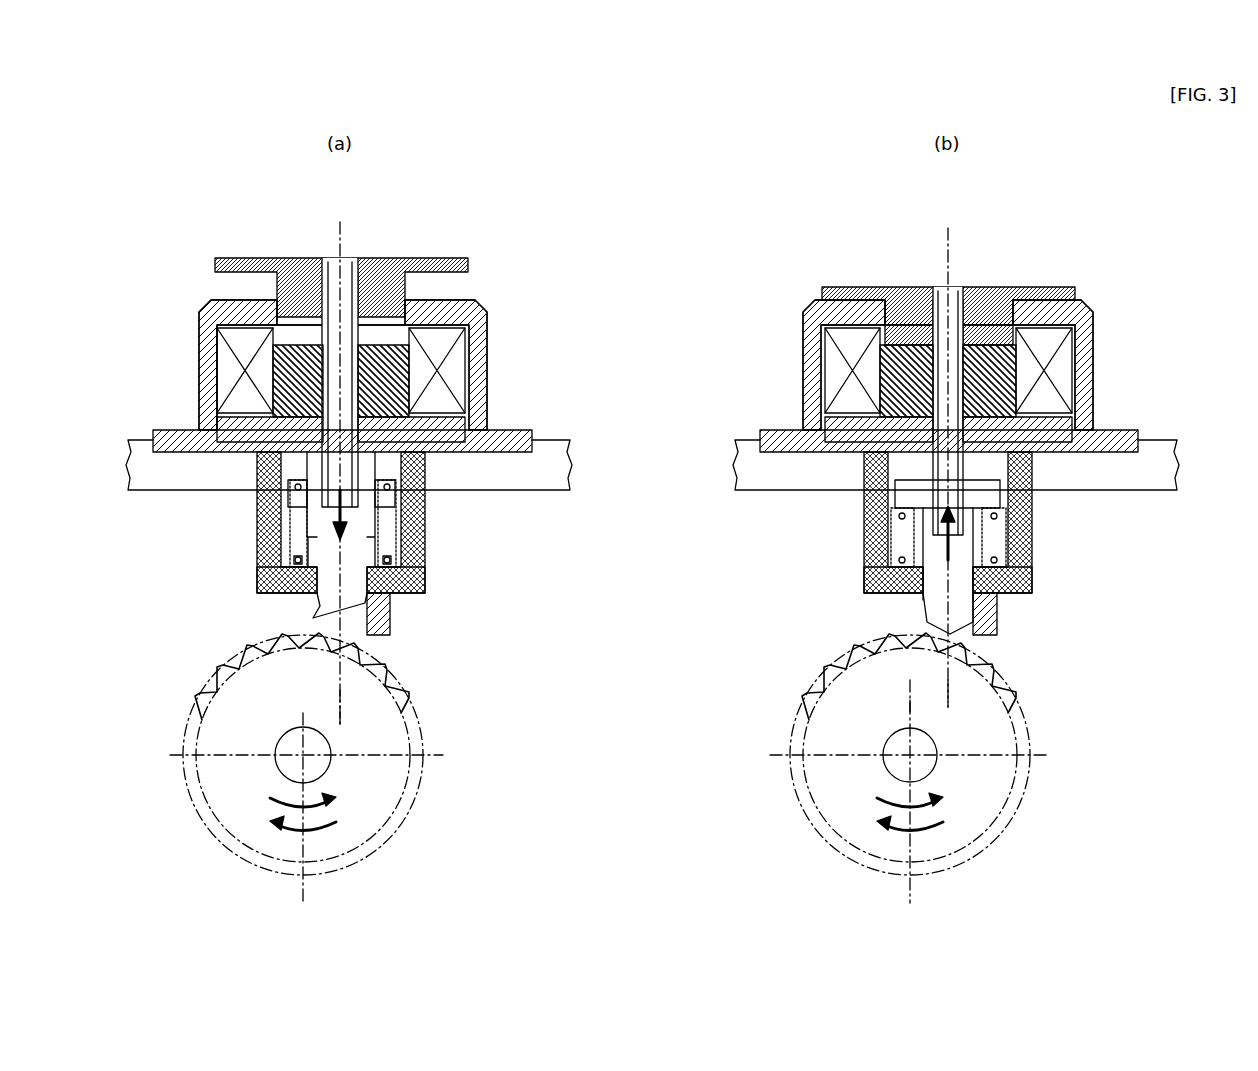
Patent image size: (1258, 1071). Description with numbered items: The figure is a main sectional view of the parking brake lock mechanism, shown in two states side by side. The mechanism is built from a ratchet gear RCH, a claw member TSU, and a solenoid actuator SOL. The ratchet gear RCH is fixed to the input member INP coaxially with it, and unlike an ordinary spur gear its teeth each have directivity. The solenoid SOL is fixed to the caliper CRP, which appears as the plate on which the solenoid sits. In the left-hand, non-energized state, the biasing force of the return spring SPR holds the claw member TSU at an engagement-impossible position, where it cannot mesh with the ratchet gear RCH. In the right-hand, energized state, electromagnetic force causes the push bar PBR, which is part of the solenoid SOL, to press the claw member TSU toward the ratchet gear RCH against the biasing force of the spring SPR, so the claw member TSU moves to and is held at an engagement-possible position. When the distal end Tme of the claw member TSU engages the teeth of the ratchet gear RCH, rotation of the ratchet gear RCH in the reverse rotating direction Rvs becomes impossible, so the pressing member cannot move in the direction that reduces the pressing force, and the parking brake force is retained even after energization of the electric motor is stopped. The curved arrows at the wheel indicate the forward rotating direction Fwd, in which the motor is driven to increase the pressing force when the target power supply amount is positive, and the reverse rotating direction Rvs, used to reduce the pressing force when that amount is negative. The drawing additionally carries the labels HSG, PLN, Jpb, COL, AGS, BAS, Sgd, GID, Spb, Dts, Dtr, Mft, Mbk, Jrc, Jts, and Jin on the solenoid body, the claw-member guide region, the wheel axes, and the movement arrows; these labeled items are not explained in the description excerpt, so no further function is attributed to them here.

The solenoid actuator SOL is at (494, 284).
The housing HSG is at (487, 331).
The plunger PLN is at (450, 257).
The push bar PBR is at (325, 257).
The plunger bar axis Jpb is at (346, 226).
The coil COL is at (460, 380).
The attracting core AGS is at (288, 345).
The base BAS is at (220, 432).
The caliper CRP is at (536, 446).
The claw member TSU is at (257, 530).
The slide guide Sgd is at (275, 587).
The guide GID is at (391, 618).
The push-back spring Spb is at (293, 515).
The return spring SPR is at (396, 515).
The downward stroke direction Dts is at (360, 528).
The retraction direction Dtr is at (952, 545).
The front mark Mft is at (290, 562).
The back mark Mbk is at (396, 562).
The distal end of claw member Tme is at (312, 617).
The ratchet gear RCH is at (405, 700).
The input member INP is at (331, 746).
The ratchet rotation axis Jrc is at (301, 753).
The tooth stopper axis Jts is at (340, 706).
The input axis Jin is at (871, 713).
The forward rotating direction Fwd is at (585, 788).
The reverse rotating direction Rvs is at (587, 818).